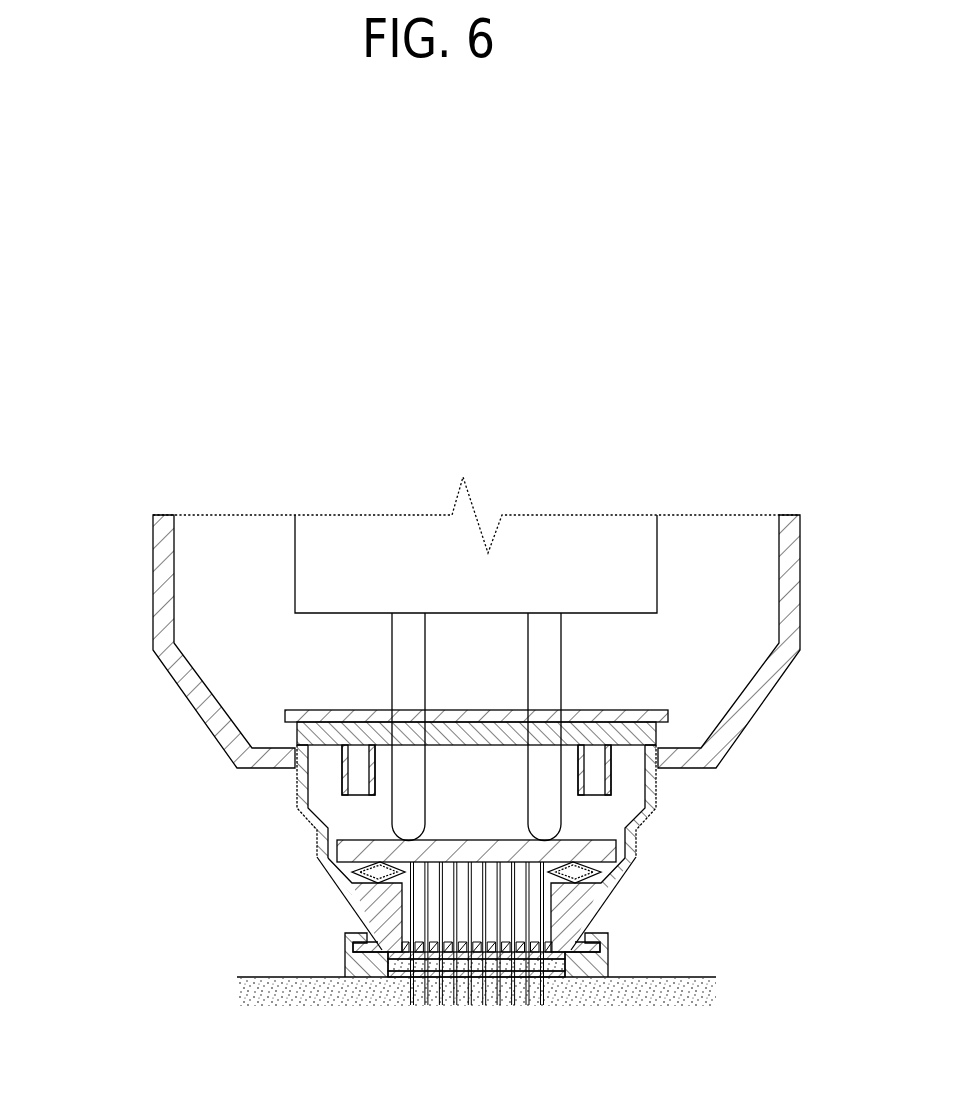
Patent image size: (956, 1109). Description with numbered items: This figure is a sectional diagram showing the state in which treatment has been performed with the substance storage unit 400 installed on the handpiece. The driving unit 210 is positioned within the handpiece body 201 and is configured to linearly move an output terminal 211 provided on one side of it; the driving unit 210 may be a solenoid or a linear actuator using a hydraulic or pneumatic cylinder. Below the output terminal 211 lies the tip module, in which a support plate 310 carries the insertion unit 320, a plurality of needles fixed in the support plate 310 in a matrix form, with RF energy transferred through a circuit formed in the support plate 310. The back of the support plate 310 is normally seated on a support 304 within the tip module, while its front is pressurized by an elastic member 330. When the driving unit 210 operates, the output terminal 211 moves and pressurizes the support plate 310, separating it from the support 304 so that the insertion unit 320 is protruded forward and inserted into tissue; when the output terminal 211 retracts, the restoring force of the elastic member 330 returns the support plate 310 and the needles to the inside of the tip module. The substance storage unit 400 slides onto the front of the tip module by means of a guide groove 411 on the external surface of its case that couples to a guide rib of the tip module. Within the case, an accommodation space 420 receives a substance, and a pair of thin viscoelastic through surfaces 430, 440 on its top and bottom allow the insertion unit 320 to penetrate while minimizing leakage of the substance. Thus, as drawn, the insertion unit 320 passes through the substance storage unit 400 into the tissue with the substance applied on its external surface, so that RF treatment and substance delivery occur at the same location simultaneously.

The handpiece body 201 is at (164, 568).
The driving unit 210 is at (332, 524).
The output terminal 211 is at (407, 624).
The support 304 is at (342, 766).
The support plate 310 is at (607, 851).
The insertion unit 320 is at (412, 896).
The elastic member 330 is at (366, 870).
The substance storage unit 400 is at (346, 950).
The guide groove 411 is at (601, 947).
The accommodation space 420 is at (386, 964).
The through surface 430 is at (555, 948).
The through surface 440 is at (548, 975).